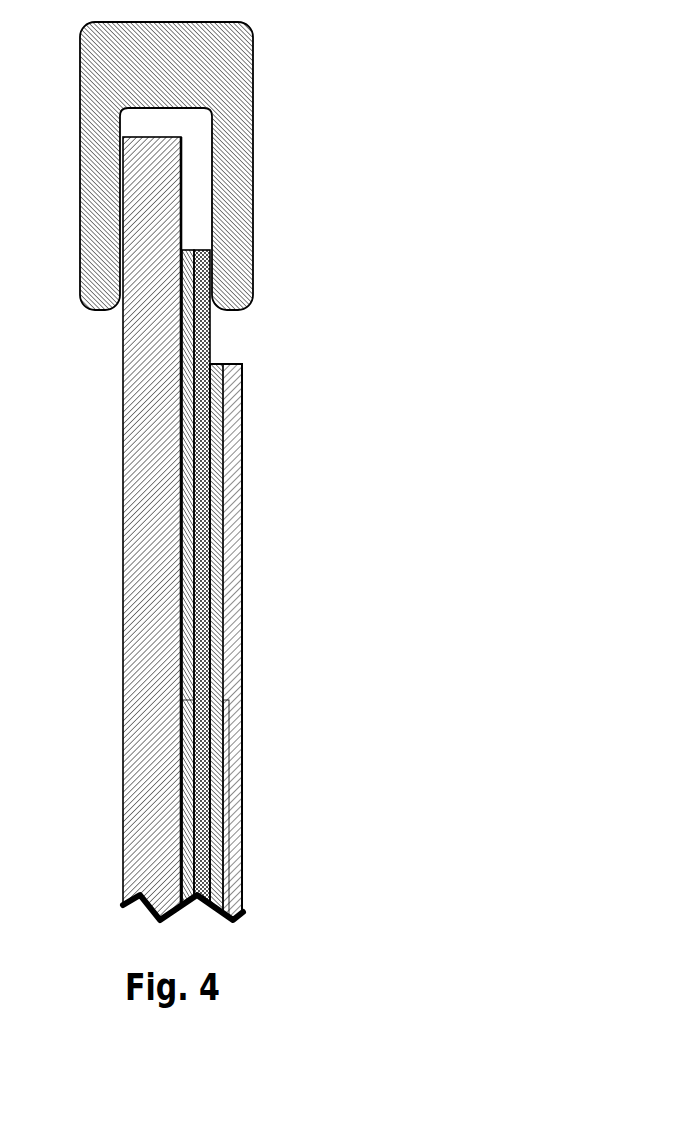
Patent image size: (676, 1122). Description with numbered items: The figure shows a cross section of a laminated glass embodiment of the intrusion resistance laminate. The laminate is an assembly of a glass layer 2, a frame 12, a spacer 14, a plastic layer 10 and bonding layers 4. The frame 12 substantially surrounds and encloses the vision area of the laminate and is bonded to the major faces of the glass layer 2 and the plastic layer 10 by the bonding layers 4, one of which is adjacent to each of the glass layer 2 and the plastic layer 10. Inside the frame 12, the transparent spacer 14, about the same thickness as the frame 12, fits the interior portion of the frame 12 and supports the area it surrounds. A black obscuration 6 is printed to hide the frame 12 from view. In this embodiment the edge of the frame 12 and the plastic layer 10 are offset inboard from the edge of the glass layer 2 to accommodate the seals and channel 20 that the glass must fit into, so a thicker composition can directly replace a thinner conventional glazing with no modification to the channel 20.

The channel 20 is at (257, 70).
The glass layer 2 is at (122, 455).
The frame 12 is at (200, 247).
The black obscuration 6 is at (184, 318).
The spacer 14 is at (213, 782).
The plastic layer 10 is at (246, 890).
The bonding layer 4 is at (225, 855).